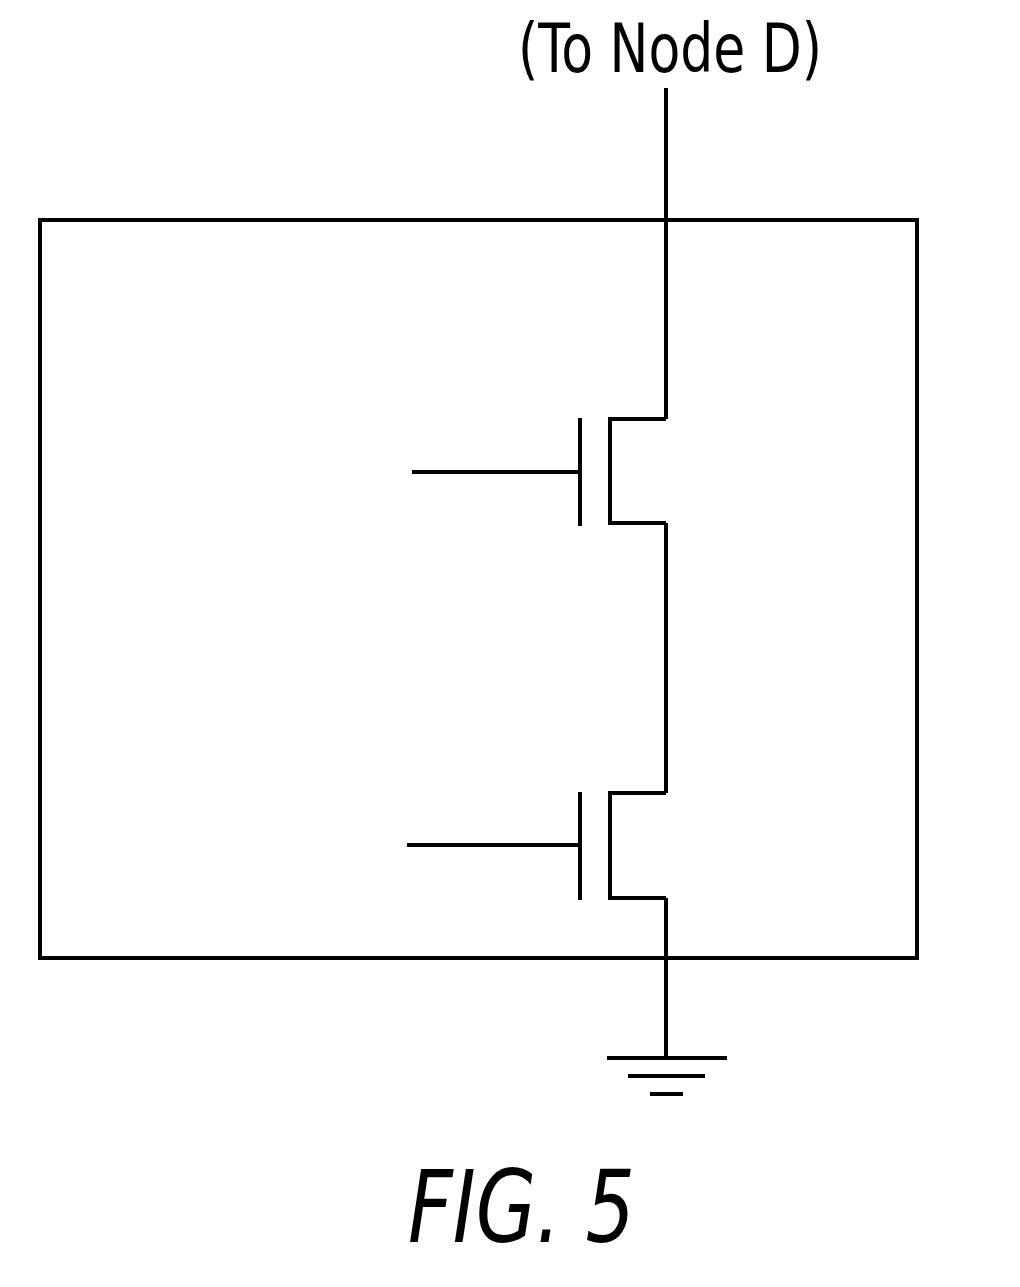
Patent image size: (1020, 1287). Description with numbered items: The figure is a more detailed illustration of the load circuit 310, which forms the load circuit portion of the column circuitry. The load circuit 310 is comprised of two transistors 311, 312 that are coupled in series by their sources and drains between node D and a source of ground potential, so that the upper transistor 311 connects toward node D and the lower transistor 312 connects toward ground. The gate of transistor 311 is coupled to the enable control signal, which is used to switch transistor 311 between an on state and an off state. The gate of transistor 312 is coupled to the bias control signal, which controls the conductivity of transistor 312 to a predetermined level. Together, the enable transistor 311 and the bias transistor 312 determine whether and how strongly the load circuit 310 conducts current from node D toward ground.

The load circuit 310 is at (205, 335).
The transistor 311 is at (631, 414).
The transistor 312 is at (631, 789).